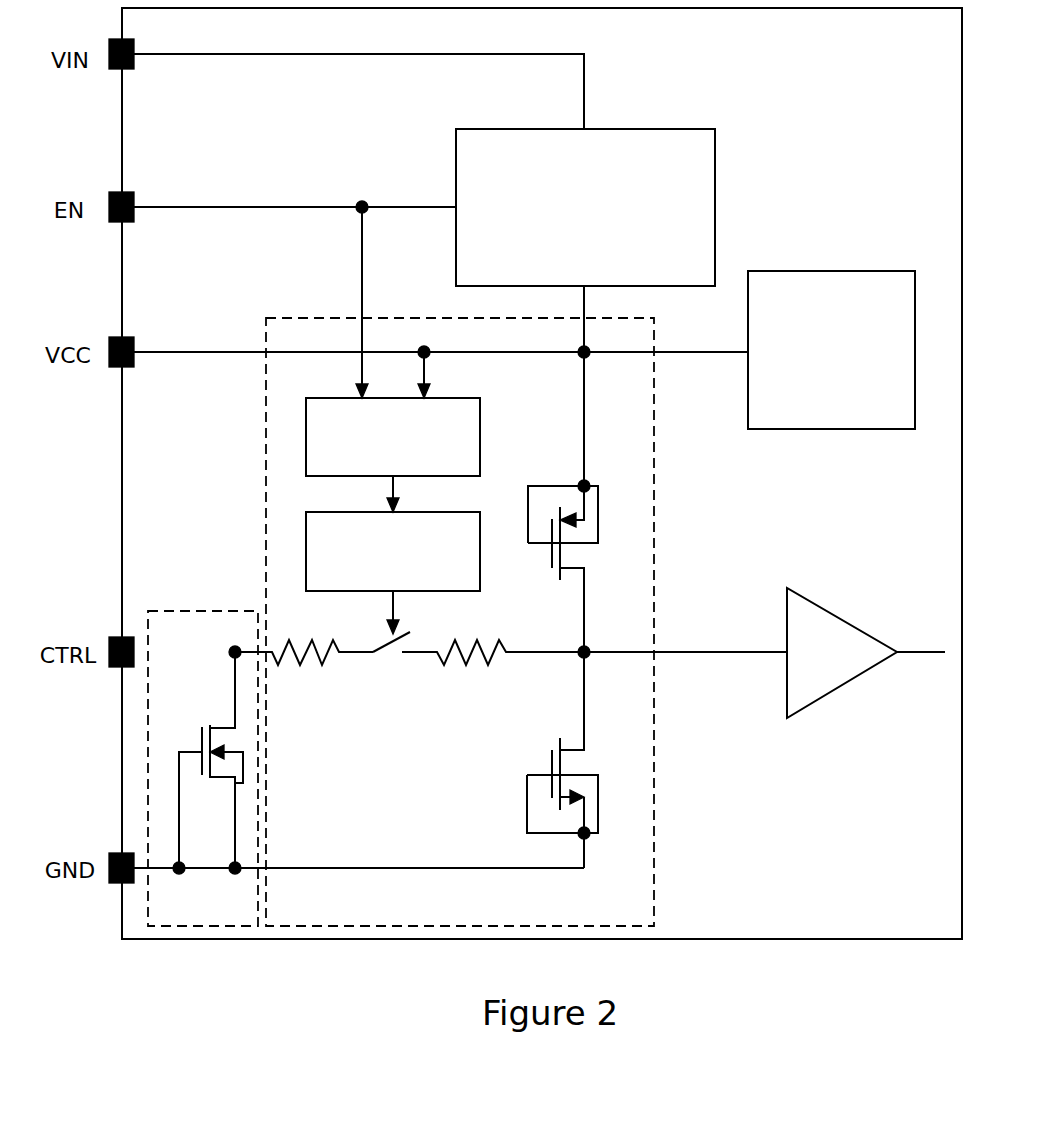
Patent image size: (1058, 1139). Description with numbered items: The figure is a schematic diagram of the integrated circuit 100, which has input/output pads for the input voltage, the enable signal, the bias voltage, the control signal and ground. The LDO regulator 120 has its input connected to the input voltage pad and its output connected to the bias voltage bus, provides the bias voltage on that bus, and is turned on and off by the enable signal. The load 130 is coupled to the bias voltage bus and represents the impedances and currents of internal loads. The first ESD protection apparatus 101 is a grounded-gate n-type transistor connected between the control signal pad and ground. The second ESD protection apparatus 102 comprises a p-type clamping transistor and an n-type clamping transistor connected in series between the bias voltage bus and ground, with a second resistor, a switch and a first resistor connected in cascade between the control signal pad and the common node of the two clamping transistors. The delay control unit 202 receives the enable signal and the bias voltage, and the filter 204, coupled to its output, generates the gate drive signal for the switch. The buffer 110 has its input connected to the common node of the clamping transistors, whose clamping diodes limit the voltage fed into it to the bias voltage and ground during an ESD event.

The integrated circuit 100 is at (888, 897).
The first ESD protection apparatus 101 is at (184, 914).
The second ESD protection apparatus 102 is at (434, 913).
The buffer 110 is at (806, 669).
The low-dropout (LDO) regulator 120 is at (564, 254).
The load 130 is at (810, 396).
The delay control unit 202 is at (372, 467).
The filter 204 is at (372, 583).